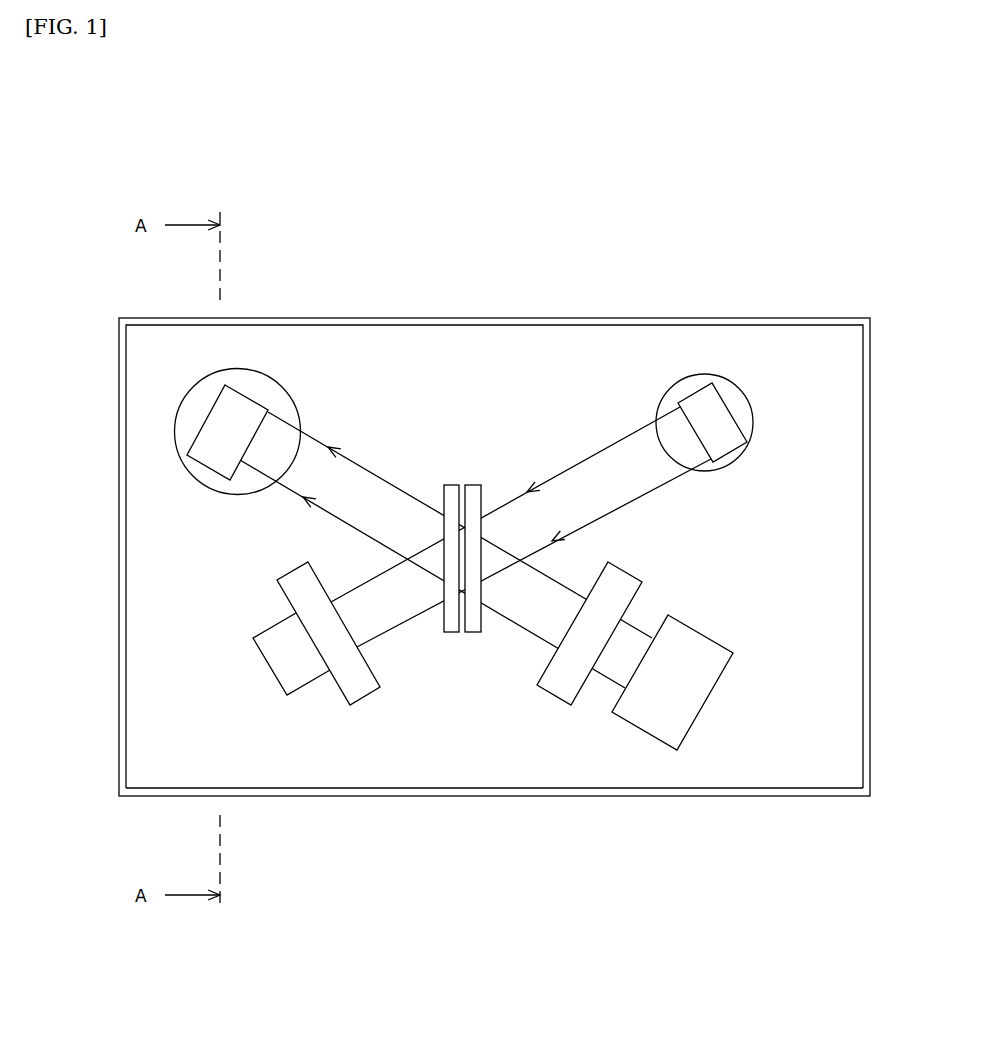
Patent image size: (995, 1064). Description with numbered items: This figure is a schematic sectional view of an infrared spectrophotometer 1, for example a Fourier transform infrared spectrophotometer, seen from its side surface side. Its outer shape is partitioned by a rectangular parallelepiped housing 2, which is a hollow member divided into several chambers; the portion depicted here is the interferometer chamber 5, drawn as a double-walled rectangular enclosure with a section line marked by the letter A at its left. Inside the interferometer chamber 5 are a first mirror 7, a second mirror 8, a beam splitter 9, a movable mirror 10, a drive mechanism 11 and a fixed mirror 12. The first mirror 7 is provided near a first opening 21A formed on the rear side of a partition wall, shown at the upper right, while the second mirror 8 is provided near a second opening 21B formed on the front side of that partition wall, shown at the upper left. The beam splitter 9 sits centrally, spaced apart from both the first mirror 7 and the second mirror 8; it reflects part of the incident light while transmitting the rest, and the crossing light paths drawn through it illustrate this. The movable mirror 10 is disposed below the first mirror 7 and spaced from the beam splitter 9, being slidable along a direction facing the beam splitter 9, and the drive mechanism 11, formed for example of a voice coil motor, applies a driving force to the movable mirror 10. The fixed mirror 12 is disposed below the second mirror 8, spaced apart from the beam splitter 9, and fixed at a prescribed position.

The infrared spectrophotometer 1 is at (648, 238).
The housing 2 is at (445, 315).
The interferometer chamber 5 is at (458, 780).
The first mirror 7 is at (723, 458).
The second mirror 8 is at (211, 470).
The beam splitter 9 is at (471, 485).
The movable mirror 10 is at (617, 563).
The drive mechanism 11 is at (700, 635).
The fixed mirror 12 is at (360, 702).
The first opening 21A is at (750, 439).
The second opening 21B is at (271, 453).